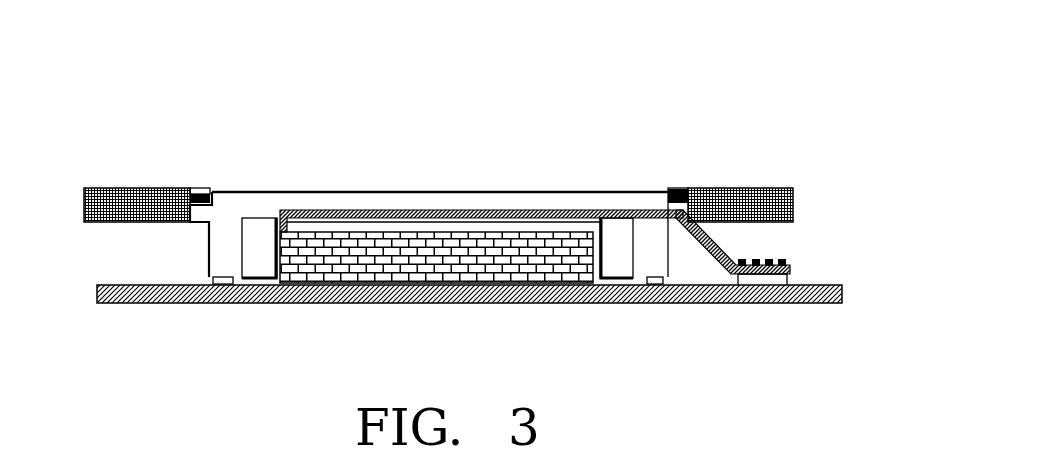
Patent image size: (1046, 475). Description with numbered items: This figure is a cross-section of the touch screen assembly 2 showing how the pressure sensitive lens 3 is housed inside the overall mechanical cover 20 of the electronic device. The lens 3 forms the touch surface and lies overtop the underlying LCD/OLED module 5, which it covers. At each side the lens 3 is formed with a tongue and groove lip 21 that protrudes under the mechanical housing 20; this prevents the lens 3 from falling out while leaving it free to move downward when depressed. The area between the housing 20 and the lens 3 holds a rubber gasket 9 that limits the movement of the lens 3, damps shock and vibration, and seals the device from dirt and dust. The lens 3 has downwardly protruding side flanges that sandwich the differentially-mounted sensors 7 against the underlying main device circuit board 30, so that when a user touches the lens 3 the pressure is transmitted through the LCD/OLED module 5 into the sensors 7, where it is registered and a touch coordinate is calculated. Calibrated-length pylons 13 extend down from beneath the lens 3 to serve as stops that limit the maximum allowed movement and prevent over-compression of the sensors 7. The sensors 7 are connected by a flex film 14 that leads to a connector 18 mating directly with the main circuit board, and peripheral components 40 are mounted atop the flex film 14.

The touch screen assembly 2 is at (578, 132).
The pressure sensitive lens 3 is at (322, 190).
The LCD/OLED module 5 is at (400, 284).
The differentially-mounted sensors 7 is at (262, 280).
The rubber gasket 9 is at (196, 190).
The calibrated-length pylons 13 is at (223, 284).
The flex film 14 is at (712, 254).
The connector 18 is at (760, 278).
The mechanical cover 20 is at (142, 188).
The tongue and groove lip 21 is at (510, 111).
The main device circuit board 30 is at (500, 284).
The peripheral components 40 is at (782, 263).